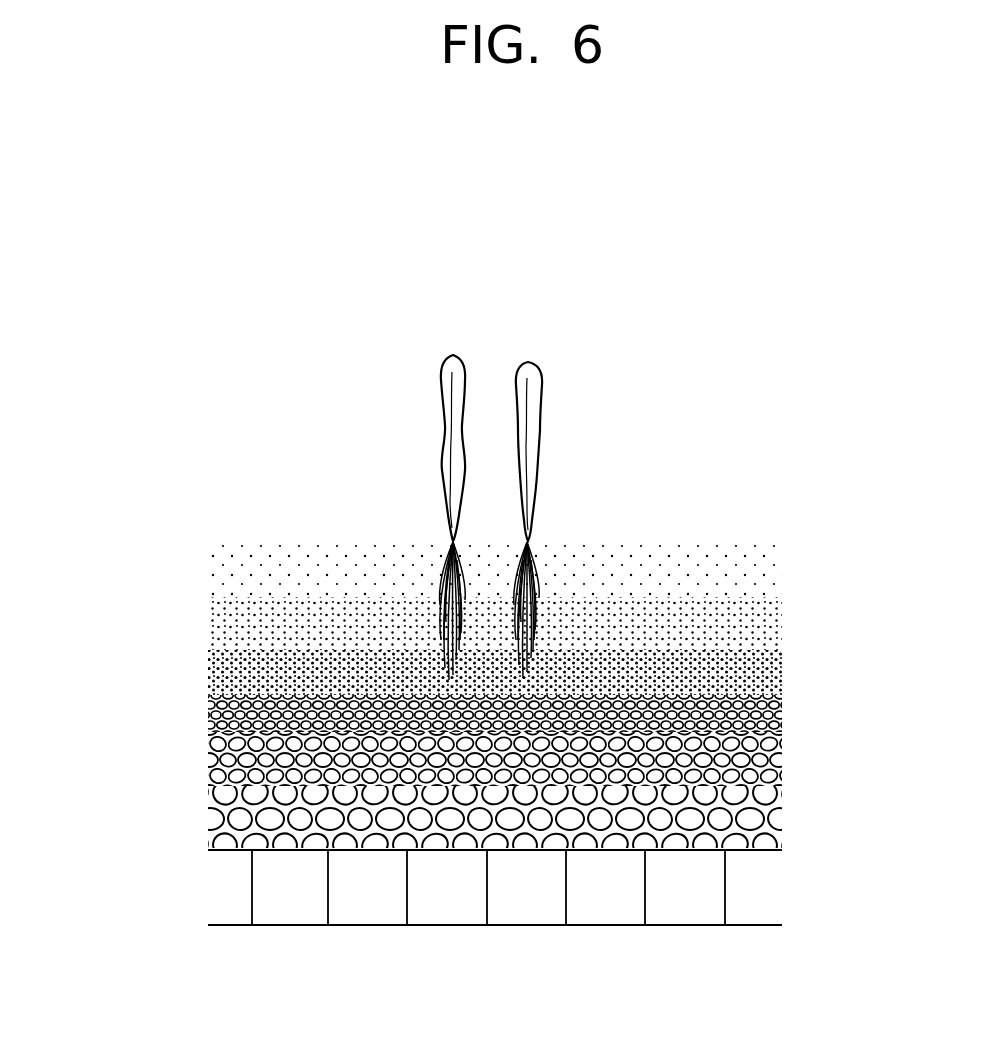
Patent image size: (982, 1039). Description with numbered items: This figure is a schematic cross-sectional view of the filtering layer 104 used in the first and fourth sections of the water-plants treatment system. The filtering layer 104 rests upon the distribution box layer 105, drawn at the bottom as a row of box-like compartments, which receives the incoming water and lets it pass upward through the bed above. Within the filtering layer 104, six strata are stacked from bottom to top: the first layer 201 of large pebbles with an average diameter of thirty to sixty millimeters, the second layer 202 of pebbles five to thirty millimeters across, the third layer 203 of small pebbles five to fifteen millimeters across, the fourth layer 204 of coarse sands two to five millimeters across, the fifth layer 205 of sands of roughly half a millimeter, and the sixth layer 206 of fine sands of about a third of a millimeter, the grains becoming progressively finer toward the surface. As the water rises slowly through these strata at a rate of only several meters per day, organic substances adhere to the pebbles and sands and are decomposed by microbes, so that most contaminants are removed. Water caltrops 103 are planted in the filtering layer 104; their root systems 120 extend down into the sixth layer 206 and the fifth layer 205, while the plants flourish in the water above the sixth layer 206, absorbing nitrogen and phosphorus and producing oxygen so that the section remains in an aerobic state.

The water caltrops 103 is at (543, 447).
The carbon nanotube emitter 120 is at (537, 570).
The filtering layer 104 is at (466, 772).
The distribution box layer 105 is at (532, 908).
The first layer 201 is at (797, 786).
The second layer 202 is at (797, 731).
The third layer 203 is at (797, 695).
The fourth layer 204 is at (797, 648).
The fifth layer 205 is at (797, 600).
The sixth layer 206 is at (797, 547).